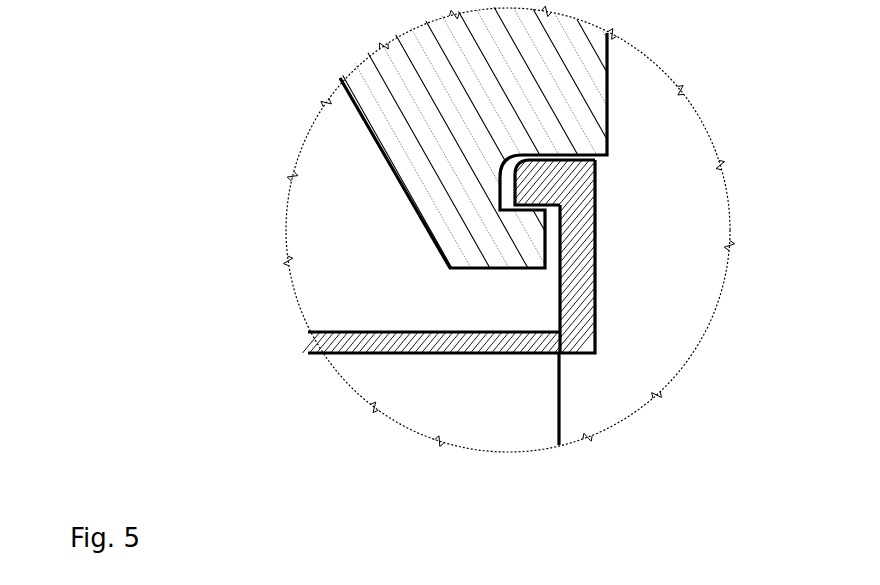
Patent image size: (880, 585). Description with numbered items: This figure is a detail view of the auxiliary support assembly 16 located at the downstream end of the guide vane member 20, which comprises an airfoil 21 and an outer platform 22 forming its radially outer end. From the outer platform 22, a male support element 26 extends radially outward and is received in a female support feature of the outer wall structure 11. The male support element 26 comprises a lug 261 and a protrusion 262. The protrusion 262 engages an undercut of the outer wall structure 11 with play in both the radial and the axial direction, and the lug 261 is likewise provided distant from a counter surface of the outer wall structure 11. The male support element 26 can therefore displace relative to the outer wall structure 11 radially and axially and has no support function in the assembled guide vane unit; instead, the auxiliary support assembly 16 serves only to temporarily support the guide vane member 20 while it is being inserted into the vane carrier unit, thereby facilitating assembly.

The outer wall structure 11 is at (375, 98).
The auxiliary support assembly 16 is at (668, 258).
The guide vane member 20 is at (592, 411).
The airfoil 21 is at (470, 423).
The outer platform 22 is at (433, 345).
The male support element 26 is at (528, 214).
The lug 261 is at (583, 292).
The protrusion 262 is at (538, 185).